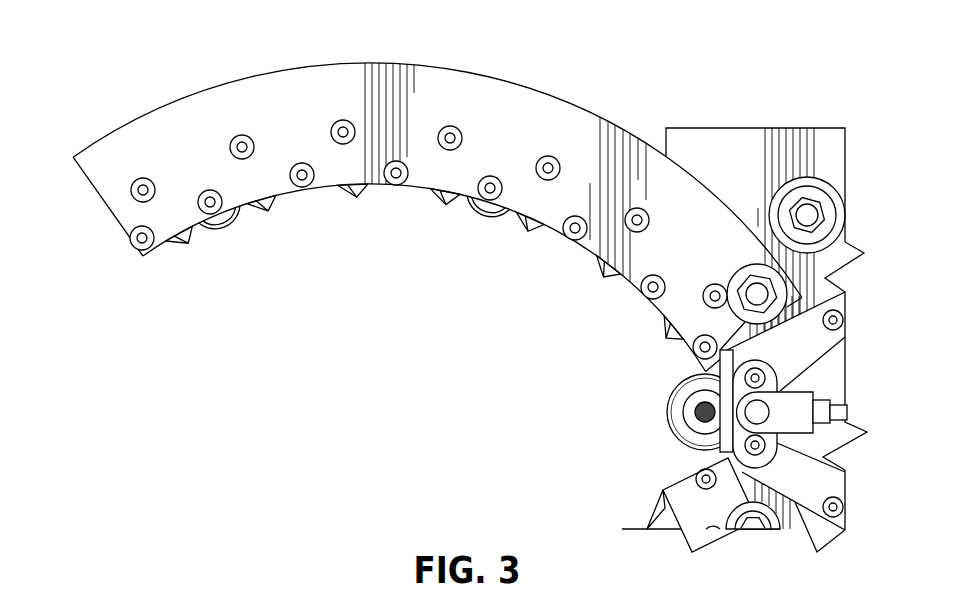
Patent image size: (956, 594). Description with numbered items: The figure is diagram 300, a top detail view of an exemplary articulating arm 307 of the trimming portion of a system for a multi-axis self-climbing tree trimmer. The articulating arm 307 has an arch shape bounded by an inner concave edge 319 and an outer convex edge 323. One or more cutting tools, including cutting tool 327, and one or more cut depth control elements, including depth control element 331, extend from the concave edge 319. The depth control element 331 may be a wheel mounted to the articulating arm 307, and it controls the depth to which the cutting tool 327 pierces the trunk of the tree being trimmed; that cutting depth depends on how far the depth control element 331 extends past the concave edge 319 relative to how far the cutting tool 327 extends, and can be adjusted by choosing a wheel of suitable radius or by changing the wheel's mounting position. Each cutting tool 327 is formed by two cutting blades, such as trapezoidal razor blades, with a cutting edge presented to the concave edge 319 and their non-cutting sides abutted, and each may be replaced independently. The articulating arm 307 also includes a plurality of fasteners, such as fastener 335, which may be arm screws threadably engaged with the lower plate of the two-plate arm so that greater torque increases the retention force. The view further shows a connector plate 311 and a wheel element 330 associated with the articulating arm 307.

The diagram 300 is at (130, 62).
The articulating arm 307 is at (510, 103).
The convex edge 323 is at (238, 79).
The connector plate 311 is at (713, 148).
The fastener 335 is at (131, 190).
The depth control element 331 is at (217, 233).
The cutting tool 327 is at (355, 197).
The concave edge 319 is at (410, 194).
The wheel element 330 is at (675, 412).